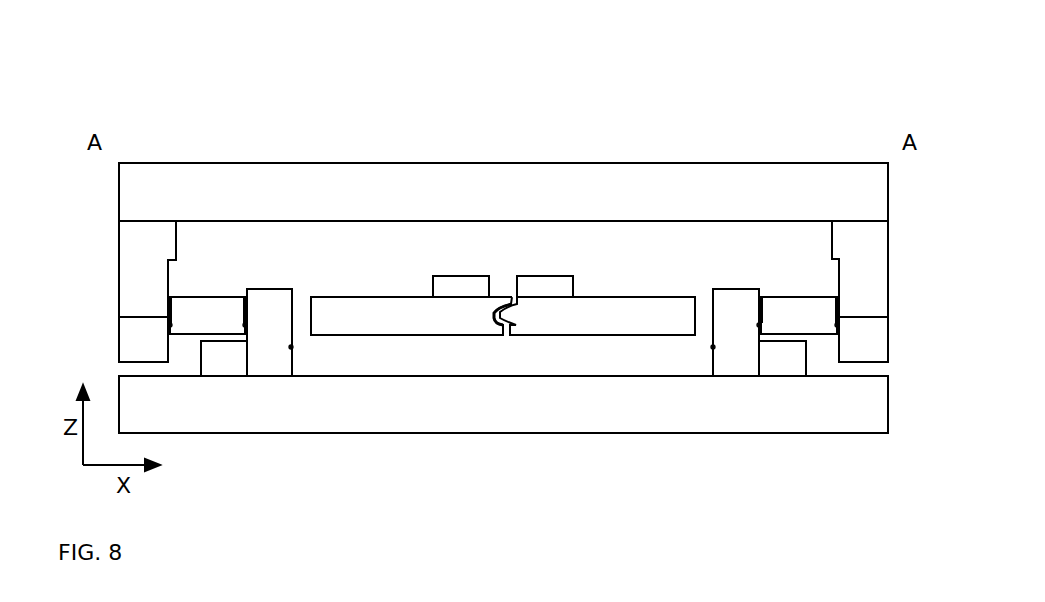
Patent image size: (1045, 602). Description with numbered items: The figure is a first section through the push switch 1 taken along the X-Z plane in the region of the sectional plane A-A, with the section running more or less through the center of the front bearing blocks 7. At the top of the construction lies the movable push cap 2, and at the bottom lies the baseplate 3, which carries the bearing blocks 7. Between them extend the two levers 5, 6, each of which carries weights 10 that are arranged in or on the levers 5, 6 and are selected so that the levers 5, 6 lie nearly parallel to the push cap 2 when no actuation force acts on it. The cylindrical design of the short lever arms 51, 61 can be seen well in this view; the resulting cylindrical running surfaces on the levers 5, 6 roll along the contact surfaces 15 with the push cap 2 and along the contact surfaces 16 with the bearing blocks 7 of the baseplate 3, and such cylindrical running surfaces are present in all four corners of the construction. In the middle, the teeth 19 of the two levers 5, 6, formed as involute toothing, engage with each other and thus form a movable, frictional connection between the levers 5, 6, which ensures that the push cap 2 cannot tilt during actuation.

The push switch 1 is at (400, 126).
The push cap 2 is at (760, 164).
The baseplate 3 is at (724, 432).
The lever 5 is at (388, 298).
The lever 6 is at (622, 298).
The bearing blocks 7 is at (292, 348).
The weights 10 is at (545, 275).
The contact surfaces 15 is at (170, 325).
The contact surfaces 16 is at (246, 326).
The teeth 19 is at (503, 326).
The short lever arm 51 is at (208, 315).
The short lever arm 61 is at (796, 315).